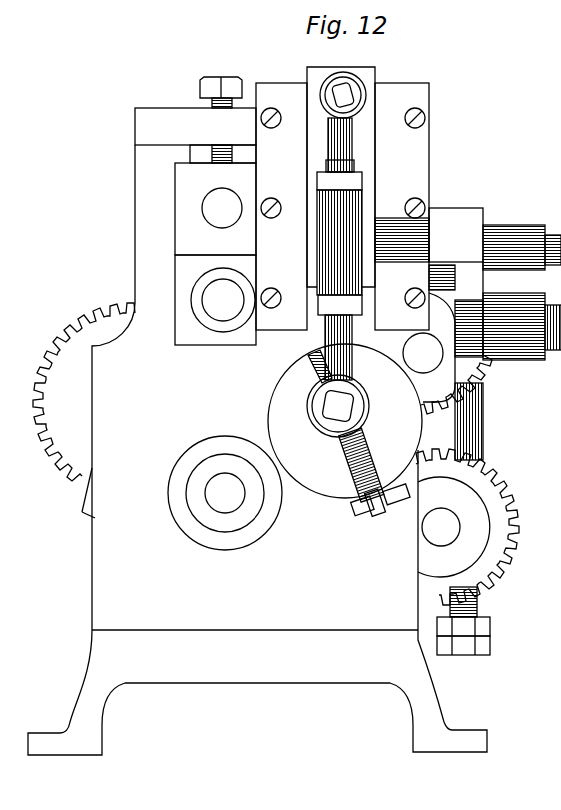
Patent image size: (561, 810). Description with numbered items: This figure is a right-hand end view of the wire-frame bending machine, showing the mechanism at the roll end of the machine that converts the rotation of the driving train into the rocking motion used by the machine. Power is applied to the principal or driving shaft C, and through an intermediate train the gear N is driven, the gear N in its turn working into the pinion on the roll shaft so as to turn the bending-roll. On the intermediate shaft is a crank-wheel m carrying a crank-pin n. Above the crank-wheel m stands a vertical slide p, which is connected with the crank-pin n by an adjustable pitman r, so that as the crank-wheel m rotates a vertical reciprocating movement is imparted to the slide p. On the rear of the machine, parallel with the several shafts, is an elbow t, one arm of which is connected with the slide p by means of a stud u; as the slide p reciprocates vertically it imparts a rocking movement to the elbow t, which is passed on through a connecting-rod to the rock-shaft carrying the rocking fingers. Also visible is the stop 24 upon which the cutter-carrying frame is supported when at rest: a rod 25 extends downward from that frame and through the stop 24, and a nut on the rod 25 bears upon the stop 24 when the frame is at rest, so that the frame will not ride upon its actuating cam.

The vertical slide p is at (341, 181).
The stud u is at (402, 240).
The elbow t is at (456, 282).
The adjustable pitman r is at (360, 408).
The crank-wheel m is at (345, 421).
The crank-pin n is at (338, 406).
The gear N is at (84, 410).
The rod 25 is at (460, 406).
The principal or driving shaft C is at (467, 527).
The stop 24 is at (480, 588).